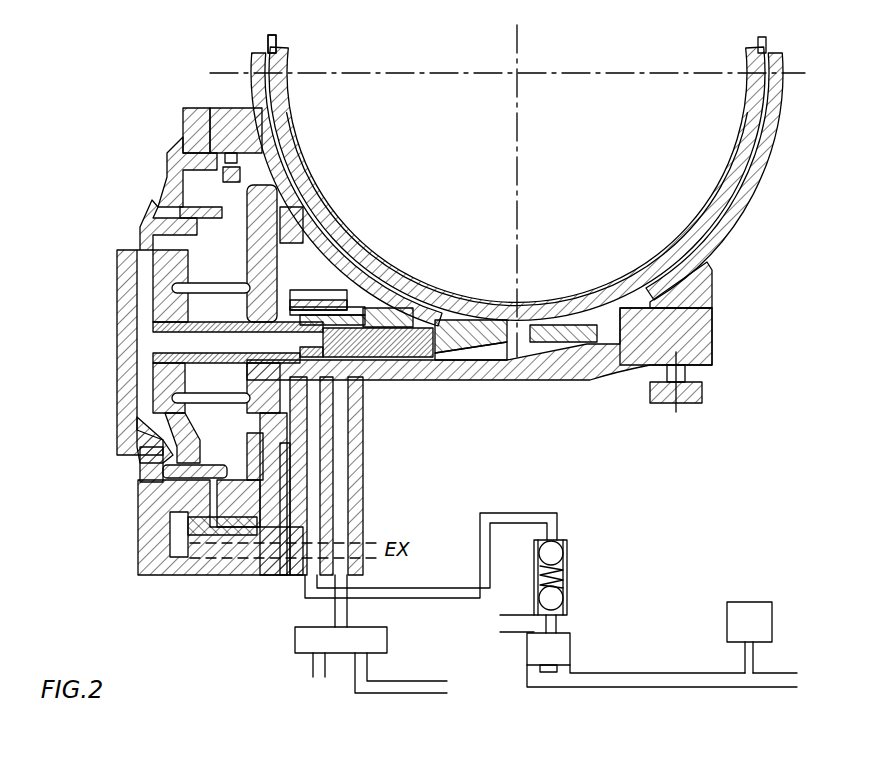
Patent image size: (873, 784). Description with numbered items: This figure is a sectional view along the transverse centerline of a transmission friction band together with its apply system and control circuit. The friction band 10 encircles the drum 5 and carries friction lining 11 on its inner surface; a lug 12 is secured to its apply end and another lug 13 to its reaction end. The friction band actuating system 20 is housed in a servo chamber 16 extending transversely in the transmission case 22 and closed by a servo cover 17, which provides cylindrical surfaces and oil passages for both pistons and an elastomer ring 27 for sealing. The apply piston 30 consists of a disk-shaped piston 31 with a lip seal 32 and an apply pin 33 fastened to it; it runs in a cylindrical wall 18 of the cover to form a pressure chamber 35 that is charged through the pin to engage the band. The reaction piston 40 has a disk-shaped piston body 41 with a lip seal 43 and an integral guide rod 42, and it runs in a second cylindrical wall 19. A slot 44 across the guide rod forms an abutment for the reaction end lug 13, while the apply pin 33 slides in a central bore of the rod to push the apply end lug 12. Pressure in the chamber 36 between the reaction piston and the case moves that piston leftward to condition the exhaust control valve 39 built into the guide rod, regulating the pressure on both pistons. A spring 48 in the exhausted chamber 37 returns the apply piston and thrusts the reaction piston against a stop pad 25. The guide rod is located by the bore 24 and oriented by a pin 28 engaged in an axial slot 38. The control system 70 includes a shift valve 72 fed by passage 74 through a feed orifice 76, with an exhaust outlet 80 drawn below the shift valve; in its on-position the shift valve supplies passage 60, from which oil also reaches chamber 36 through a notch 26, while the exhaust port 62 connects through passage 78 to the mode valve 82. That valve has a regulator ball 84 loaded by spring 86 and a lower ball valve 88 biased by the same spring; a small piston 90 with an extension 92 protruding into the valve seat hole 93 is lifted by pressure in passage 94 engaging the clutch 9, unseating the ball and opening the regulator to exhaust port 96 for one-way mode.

The drum 5 is at (680, 250).
The clutch 9 is at (749, 637).
The friction band 10 is at (743, 177).
The friction lining 11 is at (712, 220).
The apply end lug 12 is at (462, 330).
The reaction end lug 13 is at (577, 330).
The servo chamber 16 is at (340, 240).
The servo cover 17 is at (127, 322).
The cylindrical wall 18 is at (150, 447).
The cylindrical wall 19 is at (200, 193).
The friction band actuating system 20 is at (78, 343).
The transmission case 22 is at (767, 163).
The concentric bore 24 is at (698, 320).
The stop pad 25 is at (260, 178).
The notch 26 is at (316, 290).
The elastomer ring 27 is at (223, 152).
The pin 28 is at (677, 397).
The apply piston 30 is at (170, 383).
The disk-shaped piston 31 is at (175, 288).
The lip seal 32 is at (160, 208).
The apply pin 33 is at (437, 377).
The pressure chamber 35 is at (147, 417).
The chamber 36 is at (236, 155).
The exhausted chamber 37 is at (195, 183).
The axial slot 38 is at (620, 395).
The exhaust control valve 39 is at (397, 263).
The reaction piston 40 is at (243, 265).
The disk-shaped piston body 41 is at (247, 490).
The guide rod 42 is at (547, 375).
The lip seal 43 is at (210, 535).
The slot 44 is at (497, 352).
The spring 48 is at (223, 405).
The passage 60 is at (355, 437).
The exhaust port 62 is at (317, 450).
The control system 70 is at (727, 518).
The shift valve 72 is at (341, 614).
The passage 74 is at (390, 683).
The feed orifice 76 is at (385, 662).
The passage 78 is at (405, 595).
The exhaust 80 is at (300, 694).
The mode valve 82 is at (633, 567).
The ball 84 is at (562, 550).
The spring 86 is at (568, 568).
The ball valve 88 is at (562, 597).
The small piston 90 is at (560, 652).
The small extension 92 is at (560, 628).
The valve seat hole 93 is at (565, 615).
The passage 94 is at (637, 680).
The exhaust port 96 is at (517, 627).